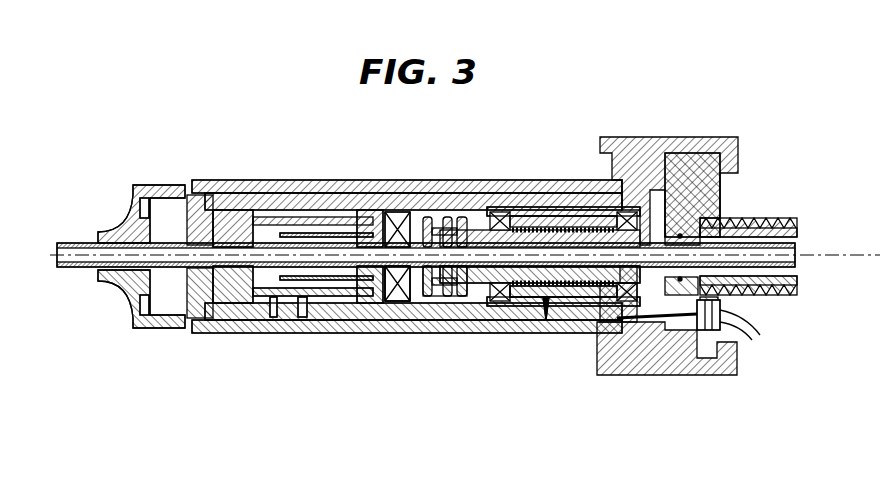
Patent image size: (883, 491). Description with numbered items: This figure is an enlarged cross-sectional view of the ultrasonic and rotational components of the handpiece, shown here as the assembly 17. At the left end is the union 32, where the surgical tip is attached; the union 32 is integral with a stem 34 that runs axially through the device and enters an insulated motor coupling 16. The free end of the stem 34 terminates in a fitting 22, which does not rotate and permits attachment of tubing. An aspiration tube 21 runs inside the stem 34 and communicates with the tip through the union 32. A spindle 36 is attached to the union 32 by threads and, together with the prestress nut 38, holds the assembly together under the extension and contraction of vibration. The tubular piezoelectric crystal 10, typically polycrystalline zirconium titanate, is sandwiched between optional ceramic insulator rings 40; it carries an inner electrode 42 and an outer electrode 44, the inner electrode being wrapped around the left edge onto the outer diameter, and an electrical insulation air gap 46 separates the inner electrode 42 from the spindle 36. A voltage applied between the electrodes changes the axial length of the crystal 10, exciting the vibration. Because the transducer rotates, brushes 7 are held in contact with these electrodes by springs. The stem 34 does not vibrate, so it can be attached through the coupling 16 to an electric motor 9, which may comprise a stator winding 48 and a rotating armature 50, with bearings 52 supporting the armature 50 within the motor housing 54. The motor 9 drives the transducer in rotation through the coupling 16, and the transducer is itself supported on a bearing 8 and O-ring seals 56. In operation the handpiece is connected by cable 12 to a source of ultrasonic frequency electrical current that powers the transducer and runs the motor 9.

The brushes 7 is at (302, 318).
The bearing 8 is at (408, 333).
The electric motor 9 is at (547, 300).
The tubular piezoelectric crystal 10 is at (305, 205).
The cable 12 is at (760, 333).
The motor coupling 16 is at (452, 183).
The spindle assembly 17 is at (694, 415).
The aspiration tube 21 is at (83, 268).
The fitting 22 is at (784, 227).
The union 32 is at (198, 238).
The stem 34 is at (472, 300).
The spindle 36 is at (338, 238).
The prestress nut 38 is at (386, 218).
The ceramic insulator rings 40 is at (262, 232).
The inner electrode 42 is at (263, 335).
The outer electrode 44 is at (318, 320).
The electrical insulation air gap 46 is at (349, 327).
The stator winding 48 is at (586, 315).
The armature 50 is at (526, 327).
The bearings 52 is at (634, 213).
The motor housing 54 is at (545, 200).
The O-ring seals 56 is at (212, 337).